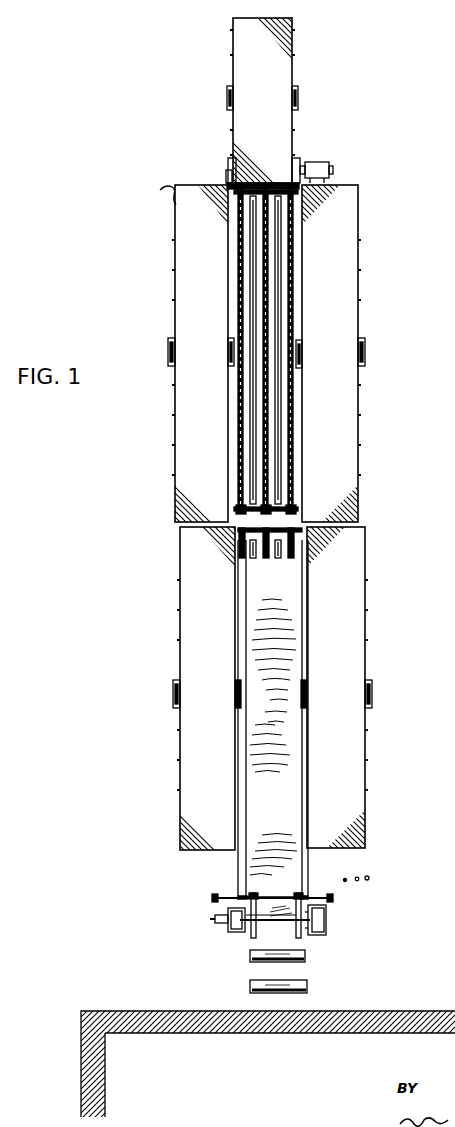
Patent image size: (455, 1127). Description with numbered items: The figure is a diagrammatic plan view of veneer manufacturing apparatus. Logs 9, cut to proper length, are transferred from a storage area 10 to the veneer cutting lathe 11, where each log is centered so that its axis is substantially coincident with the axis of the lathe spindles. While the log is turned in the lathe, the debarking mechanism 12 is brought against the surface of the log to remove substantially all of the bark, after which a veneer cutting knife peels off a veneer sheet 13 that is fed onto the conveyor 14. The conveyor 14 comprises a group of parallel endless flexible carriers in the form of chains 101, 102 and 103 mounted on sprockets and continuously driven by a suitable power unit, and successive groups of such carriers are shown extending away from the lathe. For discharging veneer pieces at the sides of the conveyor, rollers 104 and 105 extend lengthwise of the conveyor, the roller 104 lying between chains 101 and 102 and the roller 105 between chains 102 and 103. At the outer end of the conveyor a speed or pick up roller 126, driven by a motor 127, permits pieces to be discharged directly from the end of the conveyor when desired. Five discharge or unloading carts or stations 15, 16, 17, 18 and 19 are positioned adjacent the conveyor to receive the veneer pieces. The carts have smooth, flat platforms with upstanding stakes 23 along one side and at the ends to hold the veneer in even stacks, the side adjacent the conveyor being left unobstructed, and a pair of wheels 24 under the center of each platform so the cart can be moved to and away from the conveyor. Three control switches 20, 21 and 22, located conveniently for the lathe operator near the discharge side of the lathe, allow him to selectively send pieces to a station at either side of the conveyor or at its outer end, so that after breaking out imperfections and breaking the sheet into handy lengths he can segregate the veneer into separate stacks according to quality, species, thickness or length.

The logs 9 is at (305, 955).
The storage area 10 is at (178, 1011).
The veneer cutting lathe 11 is at (227, 925).
The debarking mechanism 12 is at (231, 895).
The veneer sheet 13 is at (258, 858).
The conveyor 14 is at (298, 450).
The discharge station 15 is at (183, 639).
The discharge station 16 is at (178, 411).
The discharge station 17 is at (240, 78).
The discharge station 18 is at (358, 300).
The discharge station 19 is at (365, 639).
The control switch 20 is at (345, 878).
The control switch 21 is at (357, 881).
The control switch 22 is at (369, 879).
The upstanding stakes 23 is at (160, 190).
The wheels 24 is at (170, 347).
The chain 101 is at (242, 550).
The chain 102 is at (267, 556).
The chain 103 is at (296, 547).
The roller 104 is at (251, 563).
The roller 105 is at (284, 563).
The speed or pick up roller 126 is at (228, 166).
The motor 127 is at (334, 168).